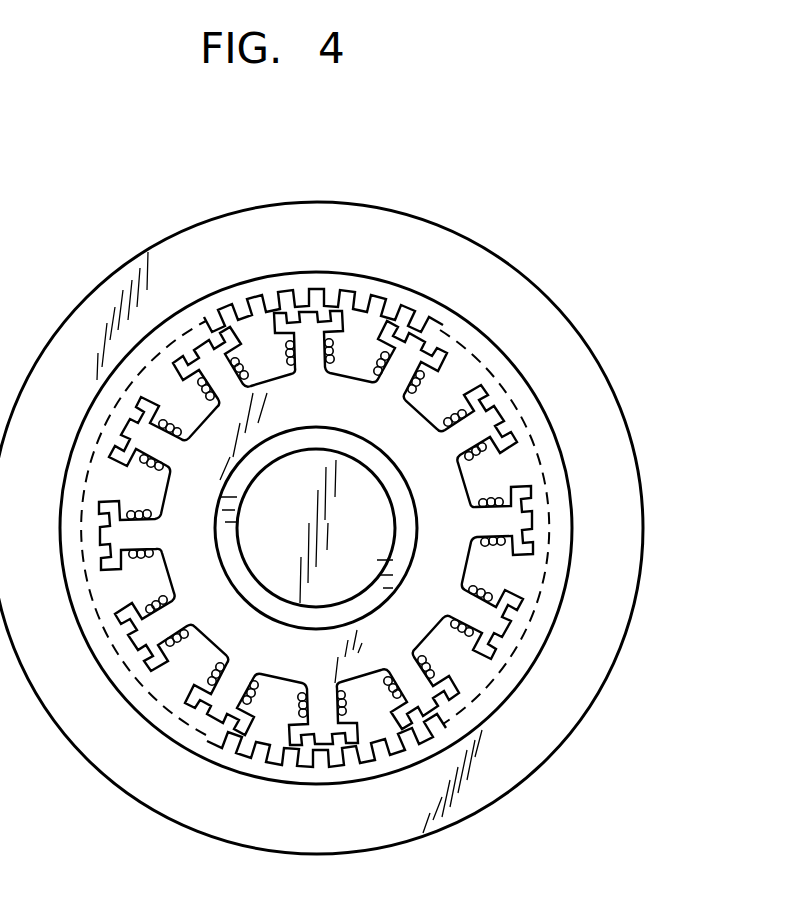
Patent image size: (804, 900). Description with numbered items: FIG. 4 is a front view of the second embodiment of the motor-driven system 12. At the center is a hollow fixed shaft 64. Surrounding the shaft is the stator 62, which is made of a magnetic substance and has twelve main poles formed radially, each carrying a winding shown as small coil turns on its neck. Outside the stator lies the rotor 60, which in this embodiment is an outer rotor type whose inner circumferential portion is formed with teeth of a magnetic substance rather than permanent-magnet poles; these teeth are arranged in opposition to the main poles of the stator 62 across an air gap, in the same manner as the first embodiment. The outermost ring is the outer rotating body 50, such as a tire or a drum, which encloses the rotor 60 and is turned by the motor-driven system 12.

The motor-driven system 12 is at (366, 481).
The outer rotating body 50 is at (615, 478).
The rotor 60 is at (394, 284).
The stator 62 is at (441, 367).
The hollow fixed shaft 64 is at (378, 592).